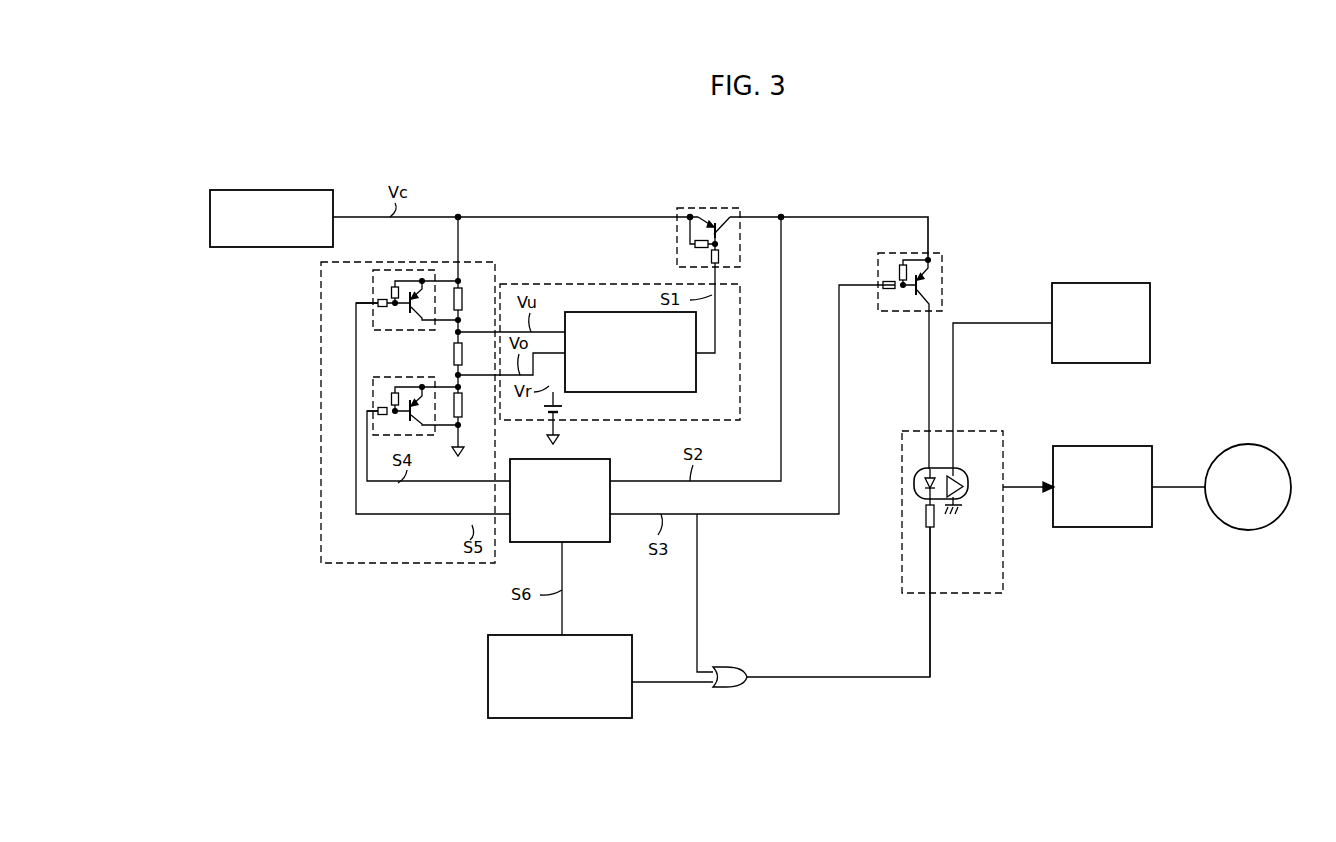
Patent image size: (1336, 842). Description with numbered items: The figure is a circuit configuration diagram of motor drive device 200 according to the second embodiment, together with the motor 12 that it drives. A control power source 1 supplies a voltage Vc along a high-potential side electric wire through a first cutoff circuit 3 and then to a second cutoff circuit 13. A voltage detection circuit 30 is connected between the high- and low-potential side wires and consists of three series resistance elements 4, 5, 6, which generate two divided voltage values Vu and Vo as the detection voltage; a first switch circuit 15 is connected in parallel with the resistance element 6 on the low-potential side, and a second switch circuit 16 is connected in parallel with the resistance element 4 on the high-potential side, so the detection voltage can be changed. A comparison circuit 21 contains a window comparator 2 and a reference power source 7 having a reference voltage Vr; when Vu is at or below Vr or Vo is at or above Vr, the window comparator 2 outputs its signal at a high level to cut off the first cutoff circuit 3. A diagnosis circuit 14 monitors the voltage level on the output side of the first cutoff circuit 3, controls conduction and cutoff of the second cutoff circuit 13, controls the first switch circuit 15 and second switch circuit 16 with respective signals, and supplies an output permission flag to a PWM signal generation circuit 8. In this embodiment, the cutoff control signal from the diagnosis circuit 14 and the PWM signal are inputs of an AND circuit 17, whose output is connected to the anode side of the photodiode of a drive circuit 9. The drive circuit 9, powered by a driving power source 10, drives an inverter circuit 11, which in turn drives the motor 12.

The control power source 1 is at (210, 204).
The window comparator 2 is at (595, 312).
The first cutoff circuit 3 is at (700, 208).
The resistance element 4 is at (462, 298).
The resistance element 5 is at (462, 352).
The resistance element 6 is at (462, 402).
The reference power source 7 is at (572, 409).
The PWM signal generation circuit 8 is at (560, 718).
The drive circuit 9 is at (1003, 571).
The driving power source 10 is at (1105, 283).
The inverter circuit 11 is at (1105, 446).
The motor 12 is at (1243, 444).
The second cutoff circuit 13 is at (942, 270).
The diagnosis circuit 14 is at (590, 542).
The first switch circuit 15 is at (378, 377).
The second switch circuit 16 is at (373, 281).
The AND circuit 17 is at (735, 689).
The comparison circuit 21 is at (740, 408).
The voltage detection circuit 30 is at (360, 563).
The motor drive device 200 is at (1190, 236).